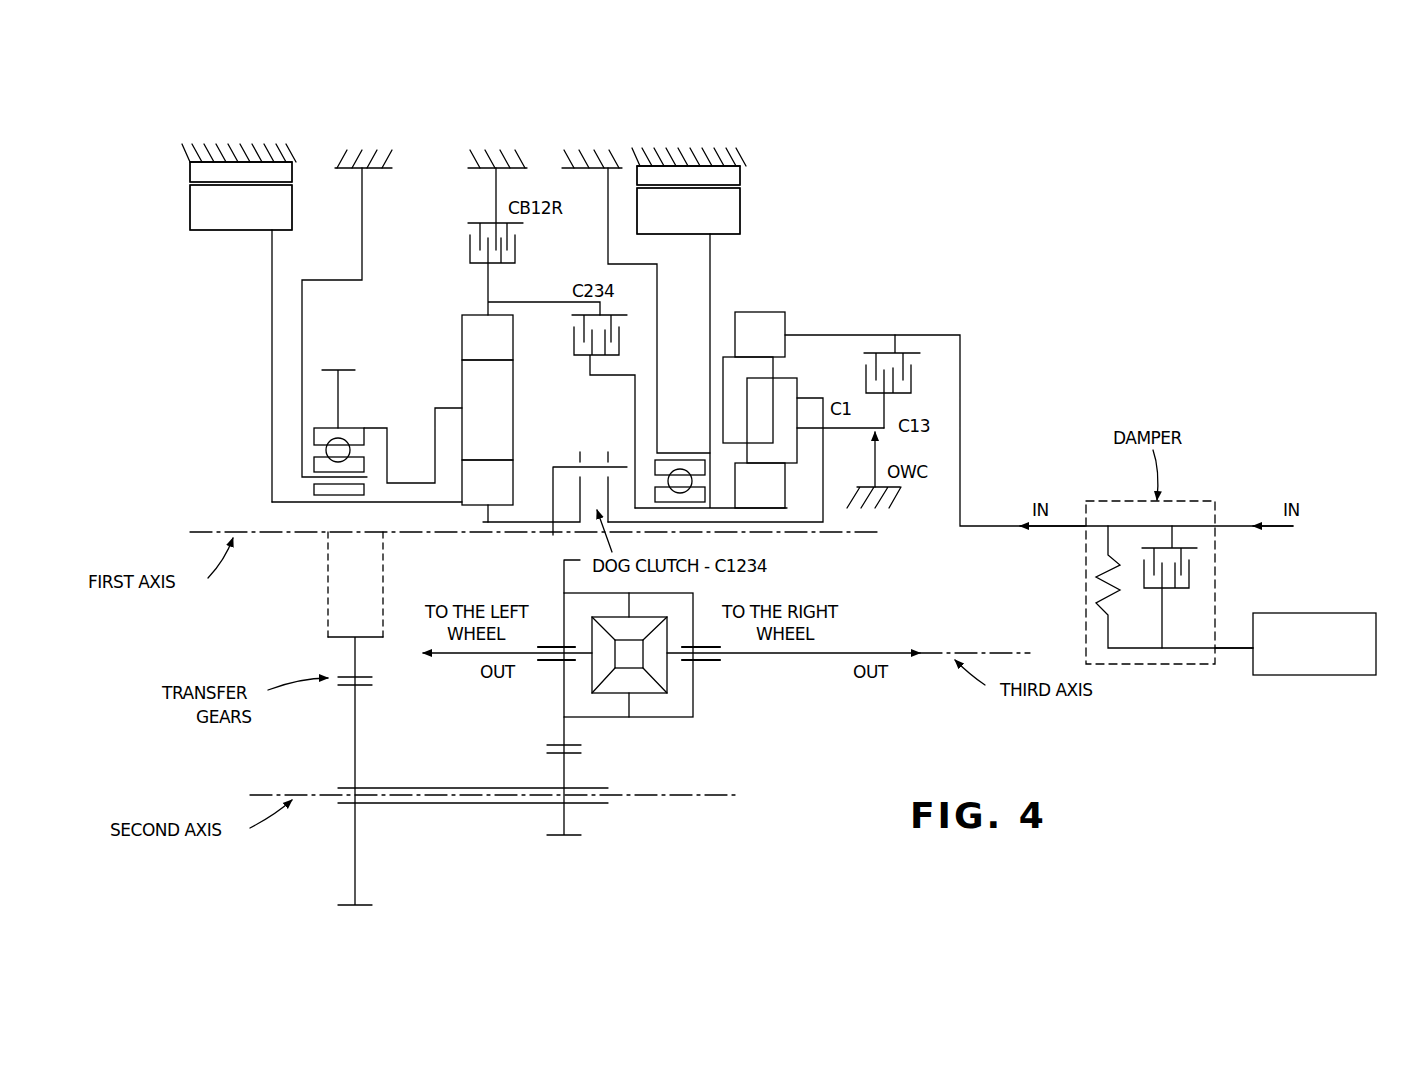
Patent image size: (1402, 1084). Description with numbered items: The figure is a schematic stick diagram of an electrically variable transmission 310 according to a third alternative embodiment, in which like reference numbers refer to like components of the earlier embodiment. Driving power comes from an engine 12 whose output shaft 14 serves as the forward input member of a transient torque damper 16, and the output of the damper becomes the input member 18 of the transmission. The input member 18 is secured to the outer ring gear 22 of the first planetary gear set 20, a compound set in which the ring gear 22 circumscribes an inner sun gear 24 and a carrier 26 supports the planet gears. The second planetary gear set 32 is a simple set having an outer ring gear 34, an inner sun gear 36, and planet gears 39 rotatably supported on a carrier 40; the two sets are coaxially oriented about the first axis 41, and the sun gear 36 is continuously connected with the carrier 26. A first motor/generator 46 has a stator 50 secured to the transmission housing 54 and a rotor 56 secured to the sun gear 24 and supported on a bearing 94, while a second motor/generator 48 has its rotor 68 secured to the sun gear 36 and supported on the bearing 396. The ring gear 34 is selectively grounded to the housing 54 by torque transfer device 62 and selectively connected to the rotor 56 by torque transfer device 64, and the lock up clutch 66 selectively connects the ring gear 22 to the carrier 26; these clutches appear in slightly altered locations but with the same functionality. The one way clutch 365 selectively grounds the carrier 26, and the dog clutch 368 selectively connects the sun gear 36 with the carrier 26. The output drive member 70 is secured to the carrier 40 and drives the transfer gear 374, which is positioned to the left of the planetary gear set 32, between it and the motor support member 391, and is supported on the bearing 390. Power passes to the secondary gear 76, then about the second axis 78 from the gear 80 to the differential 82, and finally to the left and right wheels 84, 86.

The engine 12 is at (1348, 612).
The output shaft 14 is at (1240, 650).
The transient torque damper 16 is at (1220, 498).
The input member 18 is at (998, 530).
The first planetary gear set 20 is at (760, 312).
The outer ring gear 22 is at (785, 325).
The inner sun gear 24 is at (787, 492).
The carrier 26 is at (800, 395).
The second planetary gear set 32 is at (462, 318).
The outer ring gear 34 is at (462, 340).
The inner sun gear 36 is at (513, 473).
The planet gears 39 is at (462, 382).
The carrier 40 is at (435, 410).
The first axis 41 is at (466, 540).
The first motor/generator 46 is at (745, 197).
The second motor/generator 48 is at (183, 188).
The stator 50 is at (742, 168).
The transmission housing 54 is at (289, 160).
The rotor 56 is at (742, 208).
The torque transfer device 62 is at (470, 240).
The torque transfer device 64 is at (568, 353).
The lock up clutch 66 is at (190, 168).
The rotor 68 is at (190, 208).
The output drive member 70 is at (410, 504).
The secondary gear 76 is at (355, 735).
The second axis 78 is at (440, 790).
The gear 80 is at (564, 768).
The differential 82 is at (697, 730).
The left wheel 84 is at (465, 658).
The right wheel 86 is at (885, 650).
The bearing 94 is at (655, 483).
The transmission 310 is at (180, 350).
The one way clutch 365 is at (892, 447).
The dog clutch 368 is at (560, 542).
The transfer gear 374 is at (343, 360).
The bearing 390 is at (310, 447).
The motor support member 391 is at (272, 315).
The bearing 396 is at (310, 490).